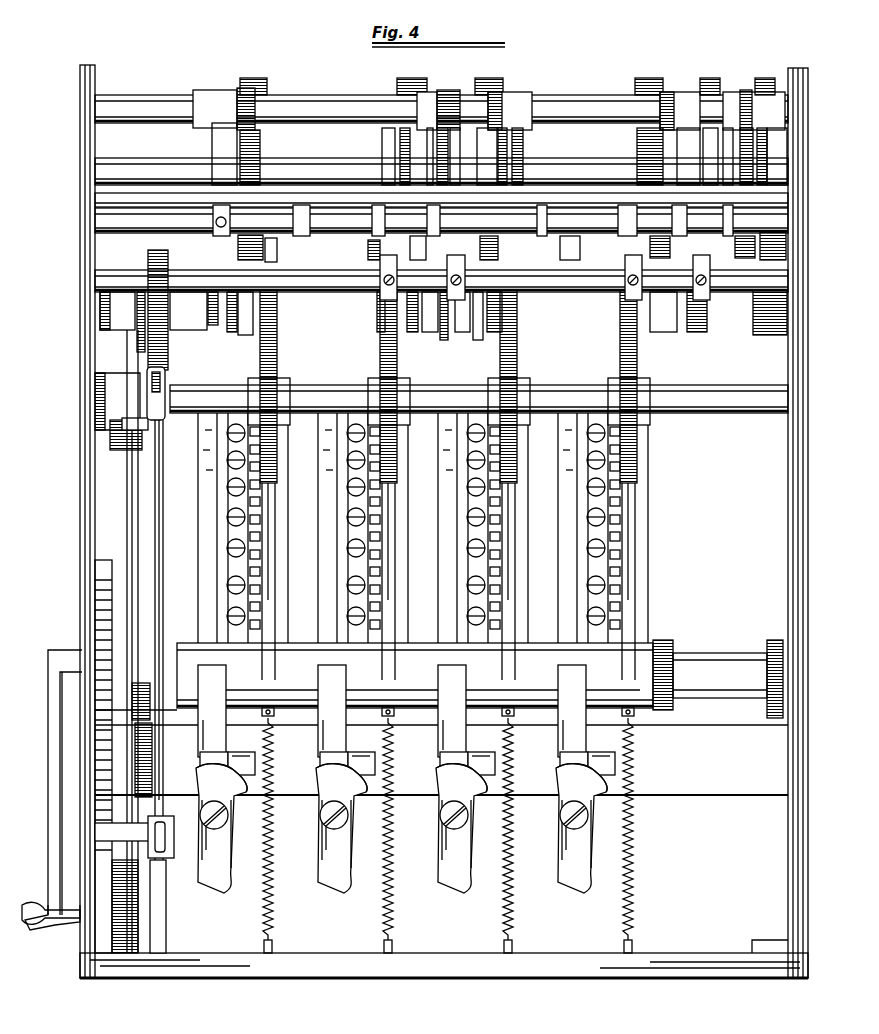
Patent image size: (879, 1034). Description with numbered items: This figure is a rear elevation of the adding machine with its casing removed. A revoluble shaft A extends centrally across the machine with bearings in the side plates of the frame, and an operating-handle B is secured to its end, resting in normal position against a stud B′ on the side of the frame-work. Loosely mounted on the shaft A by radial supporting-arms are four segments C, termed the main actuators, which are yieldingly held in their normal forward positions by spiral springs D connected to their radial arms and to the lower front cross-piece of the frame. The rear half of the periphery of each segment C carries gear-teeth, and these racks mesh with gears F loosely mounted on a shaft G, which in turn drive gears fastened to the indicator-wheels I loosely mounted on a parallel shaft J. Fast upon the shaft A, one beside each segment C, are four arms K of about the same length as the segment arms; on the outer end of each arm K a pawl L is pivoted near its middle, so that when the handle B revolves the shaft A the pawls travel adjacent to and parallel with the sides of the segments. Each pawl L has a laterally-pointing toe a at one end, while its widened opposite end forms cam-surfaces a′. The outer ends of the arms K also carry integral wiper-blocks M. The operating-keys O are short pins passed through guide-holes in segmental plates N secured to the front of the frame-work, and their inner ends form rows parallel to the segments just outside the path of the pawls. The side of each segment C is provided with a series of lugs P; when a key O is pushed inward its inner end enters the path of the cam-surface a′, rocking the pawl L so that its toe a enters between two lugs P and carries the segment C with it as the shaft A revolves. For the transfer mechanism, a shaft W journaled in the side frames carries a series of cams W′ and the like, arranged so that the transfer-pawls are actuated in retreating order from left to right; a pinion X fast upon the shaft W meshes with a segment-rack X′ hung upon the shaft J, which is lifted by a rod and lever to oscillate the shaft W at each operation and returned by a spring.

The revoluble shaft A is at (718, 656).
The operating-handle B is at (52, 726).
The stud B′ is at (65, 925).
The segment C is at (276, 512).
The spiral spring D is at (275, 922).
The gear F is at (259, 358).
The shaft G is at (479, 399).
The indicator-wheel I is at (159, 492).
The shaft J is at (95, 620).
The arm or pawl-support K is at (416, 711).
The pawl L is at (222, 857).
The wiper-block M is at (244, 752).
The segmental plate N is at (225, 573).
The key O is at (227, 522).
The lug P is at (262, 611).
The shaft W is at (441, 281).
The cam W′ is at (374, 277).
The pinion X is at (169, 259).
The segment-rack X′ is at (166, 362).
The toe a is at (221, 882).
The cam-surface a′ is at (230, 812).